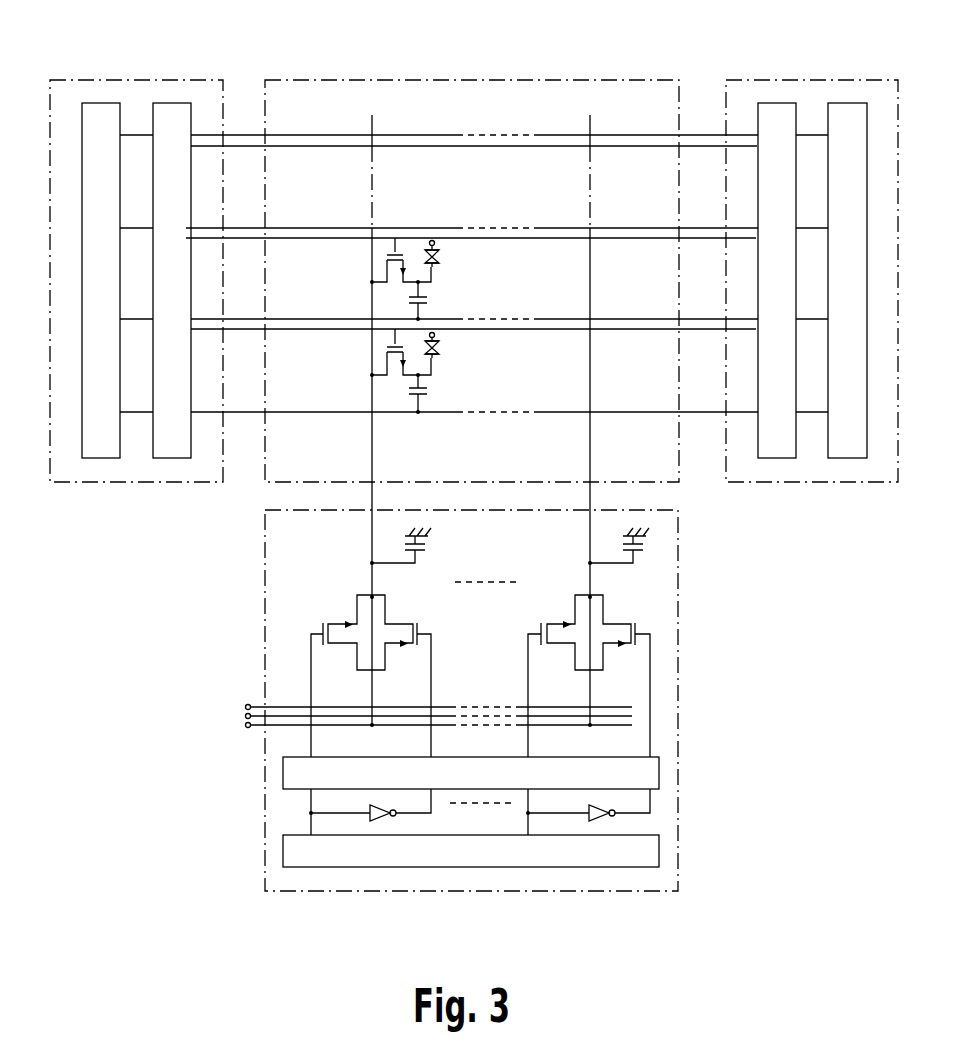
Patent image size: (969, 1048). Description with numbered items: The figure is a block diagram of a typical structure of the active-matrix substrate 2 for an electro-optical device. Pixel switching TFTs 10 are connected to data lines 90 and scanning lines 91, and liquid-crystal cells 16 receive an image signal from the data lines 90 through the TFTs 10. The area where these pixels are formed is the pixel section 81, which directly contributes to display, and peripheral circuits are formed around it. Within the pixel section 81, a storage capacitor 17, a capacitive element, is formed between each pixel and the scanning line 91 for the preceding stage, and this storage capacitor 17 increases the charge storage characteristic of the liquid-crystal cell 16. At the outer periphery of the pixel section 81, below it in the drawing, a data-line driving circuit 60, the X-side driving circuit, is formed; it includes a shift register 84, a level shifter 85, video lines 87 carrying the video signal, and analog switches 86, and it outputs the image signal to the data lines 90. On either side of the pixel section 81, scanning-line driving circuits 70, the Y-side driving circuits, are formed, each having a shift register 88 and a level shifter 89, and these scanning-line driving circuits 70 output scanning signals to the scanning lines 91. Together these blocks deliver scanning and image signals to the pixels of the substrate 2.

The active-matrix substrate 2 is at (708, 856).
The pixel switching TFT 10 is at (417, 246).
The liquid-crystal cell 16 is at (437, 246).
The storage capacitor 17 is at (432, 297).
The data-line driving circuit 60 is at (520, 892).
The scanning-line driving circuit 70 is at (474, 267).
The pixel section 81 is at (440, 80).
The shift register 84 is at (283, 855).
The level shifter 85 is at (283, 770).
The analog switch 86 is at (357, 606).
The video line 87 is at (160, 682).
The shift register 88 is at (105, 460).
The level shifter 89 is at (167, 112).
The data line 90 is at (372, 128).
The scanning line 91 is at (650, 330).